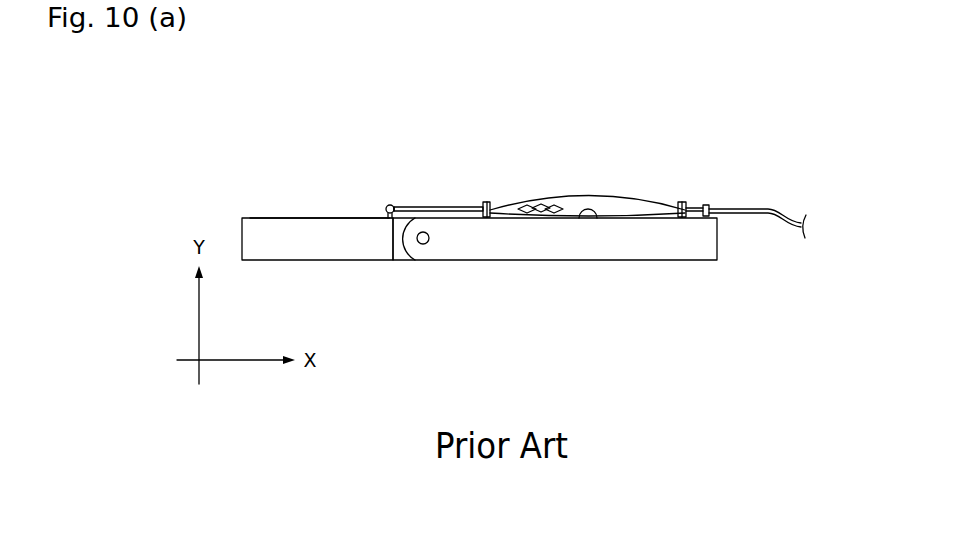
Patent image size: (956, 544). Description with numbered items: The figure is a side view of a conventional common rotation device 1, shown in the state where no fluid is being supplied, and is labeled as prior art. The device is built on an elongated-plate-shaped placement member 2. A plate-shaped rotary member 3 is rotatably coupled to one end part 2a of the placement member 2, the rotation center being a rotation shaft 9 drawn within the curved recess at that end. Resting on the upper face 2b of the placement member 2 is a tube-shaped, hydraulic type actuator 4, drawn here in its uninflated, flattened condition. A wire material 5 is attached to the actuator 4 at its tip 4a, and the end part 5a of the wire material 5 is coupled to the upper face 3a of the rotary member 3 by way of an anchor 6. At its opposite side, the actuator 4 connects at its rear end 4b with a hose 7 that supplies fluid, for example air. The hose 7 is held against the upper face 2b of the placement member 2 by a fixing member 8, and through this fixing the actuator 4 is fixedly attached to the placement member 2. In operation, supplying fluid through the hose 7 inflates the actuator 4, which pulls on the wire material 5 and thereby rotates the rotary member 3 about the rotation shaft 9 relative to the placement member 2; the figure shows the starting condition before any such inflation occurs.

The rotation device 1 is at (814, 340).
The placement member 2 is at (568, 272).
The one end part of placement member 2a is at (428, 252).
The upper face of placement member 2b is at (598, 219).
The rotary member 3 is at (363, 272).
The upper face of rotary member 3a is at (293, 217).
The actuator 4 is at (593, 193).
The tip of actuator 4a is at (490, 203).
The rear end of actuator 4b is at (683, 202).
The wire material 5 is at (440, 207).
The end part of wire material 5a is at (392, 205).
The anchor 6 is at (387, 206).
The hose 7 is at (778, 211).
The fixing member 8 is at (706, 205).
The rotation shaft 9 is at (430, 244).